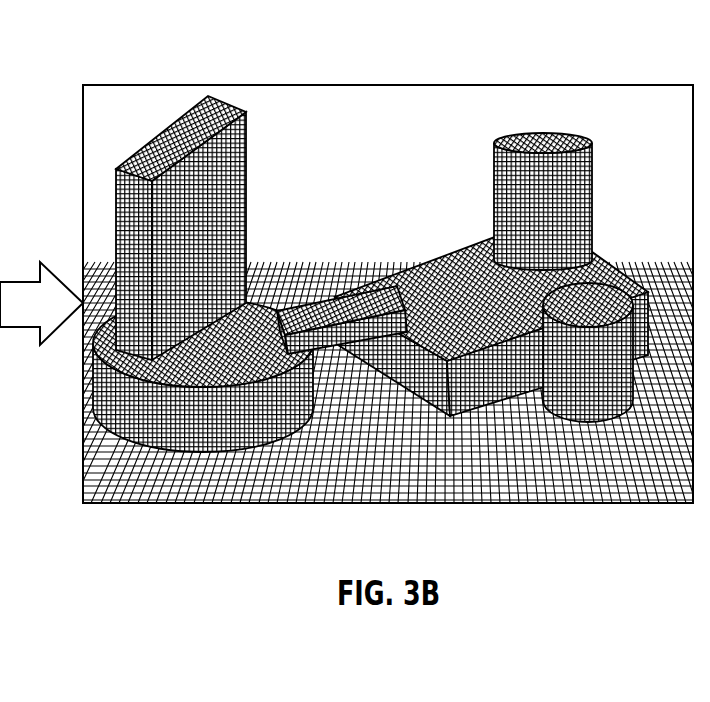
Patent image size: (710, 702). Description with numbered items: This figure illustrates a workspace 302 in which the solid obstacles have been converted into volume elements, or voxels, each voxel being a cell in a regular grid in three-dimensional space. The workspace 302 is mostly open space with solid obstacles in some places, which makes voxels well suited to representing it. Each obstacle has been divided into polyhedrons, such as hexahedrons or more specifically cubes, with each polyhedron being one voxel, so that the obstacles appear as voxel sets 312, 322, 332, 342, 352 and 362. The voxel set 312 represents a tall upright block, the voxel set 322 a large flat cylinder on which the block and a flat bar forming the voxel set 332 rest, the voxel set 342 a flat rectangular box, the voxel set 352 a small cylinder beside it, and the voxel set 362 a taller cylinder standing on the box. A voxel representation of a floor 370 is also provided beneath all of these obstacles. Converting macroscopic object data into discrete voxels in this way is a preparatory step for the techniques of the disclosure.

The workspace 302 is at (521, 78).
The voxel set 312 is at (247, 142).
The voxel set 322 is at (108, 438).
The voxel set 332 is at (338, 300).
The voxel set 342 is at (433, 270).
The voxel set 352 is at (588, 416).
The voxel set 362 is at (595, 177).
The floor 370 is at (555, 477).